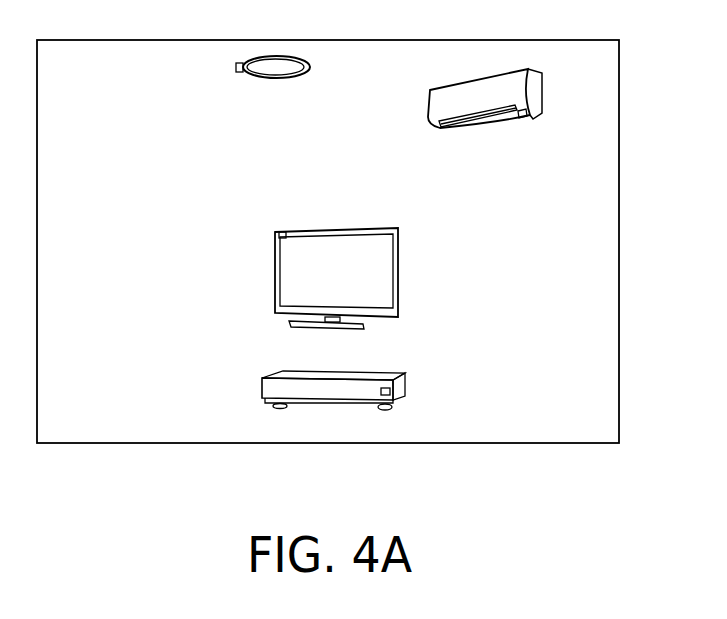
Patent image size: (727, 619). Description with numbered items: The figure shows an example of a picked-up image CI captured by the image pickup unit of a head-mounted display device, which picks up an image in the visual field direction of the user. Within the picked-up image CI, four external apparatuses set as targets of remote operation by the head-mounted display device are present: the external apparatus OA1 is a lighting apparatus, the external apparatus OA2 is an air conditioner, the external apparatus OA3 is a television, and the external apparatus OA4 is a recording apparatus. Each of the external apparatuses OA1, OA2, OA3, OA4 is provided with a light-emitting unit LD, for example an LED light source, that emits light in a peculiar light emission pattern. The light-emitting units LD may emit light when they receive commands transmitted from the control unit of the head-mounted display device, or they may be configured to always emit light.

The picked-up image CI is at (477, 40).
The external apparatus OA1 is at (275, 79).
The external apparatus OA2 is at (498, 130).
The external apparatus OA3 is at (333, 227).
The external apparatus OA4 is at (405, 382).
The light-emitting unit LD is at (240, 73).